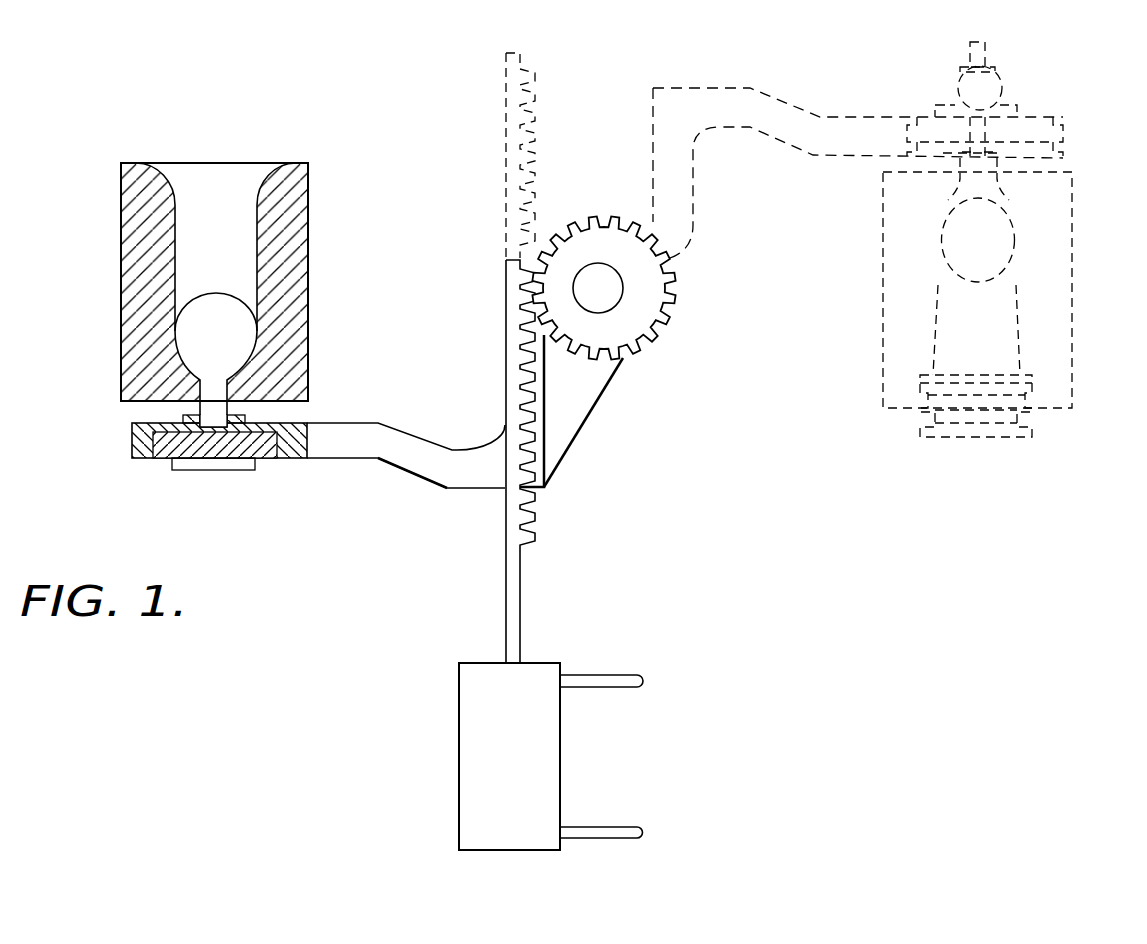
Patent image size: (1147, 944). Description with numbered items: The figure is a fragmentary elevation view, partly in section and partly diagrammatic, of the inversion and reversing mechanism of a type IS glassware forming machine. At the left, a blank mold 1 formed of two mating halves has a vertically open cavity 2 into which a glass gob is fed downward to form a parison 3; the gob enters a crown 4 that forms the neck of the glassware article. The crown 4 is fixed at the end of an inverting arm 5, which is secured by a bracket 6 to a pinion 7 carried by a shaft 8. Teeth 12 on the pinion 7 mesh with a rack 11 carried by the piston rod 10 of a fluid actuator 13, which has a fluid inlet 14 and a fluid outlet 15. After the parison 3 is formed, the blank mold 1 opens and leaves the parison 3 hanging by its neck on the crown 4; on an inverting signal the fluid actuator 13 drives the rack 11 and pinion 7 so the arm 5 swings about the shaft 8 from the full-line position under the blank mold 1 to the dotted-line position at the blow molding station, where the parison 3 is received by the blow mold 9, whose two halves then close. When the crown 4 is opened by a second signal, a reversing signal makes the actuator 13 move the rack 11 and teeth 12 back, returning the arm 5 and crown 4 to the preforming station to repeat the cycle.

The blank mold 1 is at (136, 306).
The cavity 2 is at (209, 175).
The parison 3 is at (236, 323).
The crown 4 is at (190, 462).
The inverting arm 5 is at (378, 455).
The bracket 6 is at (653, 137).
The pinion 7 is at (643, 303).
The shaft 8 is at (613, 287).
The blow mold 9 is at (1057, 377).
The piston rod 10 is at (515, 582).
The rack 11 is at (530, 455).
The teeth 12 is at (613, 381).
The fluid actuator 13 is at (542, 743).
The fluid inlet 14 is at (622, 675).
The fluid outlet 15 is at (612, 829).